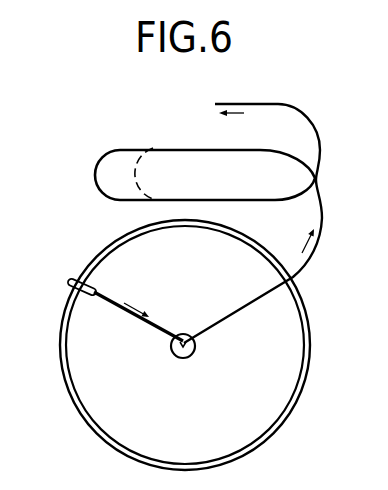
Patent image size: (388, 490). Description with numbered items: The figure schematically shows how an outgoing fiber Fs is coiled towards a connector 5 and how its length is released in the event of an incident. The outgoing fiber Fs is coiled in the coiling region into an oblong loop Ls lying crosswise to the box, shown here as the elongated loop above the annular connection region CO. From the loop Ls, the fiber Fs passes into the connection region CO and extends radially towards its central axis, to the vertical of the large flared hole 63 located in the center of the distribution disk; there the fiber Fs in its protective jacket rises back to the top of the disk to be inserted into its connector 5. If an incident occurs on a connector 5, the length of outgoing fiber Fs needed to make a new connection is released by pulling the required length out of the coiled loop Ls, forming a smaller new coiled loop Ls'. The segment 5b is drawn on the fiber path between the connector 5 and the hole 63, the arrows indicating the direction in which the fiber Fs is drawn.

The connection region CO is at (311, 354).
The flared hole 63 is at (188, 358).
The fiber-to-fiber connector 5 is at (70, 289).
The strand segment from tab 5b is at (97, 290).
The outgoing fiber Fs is at (321, 109).
The coiled loop Ls is at (189, 189).
The new coiled loop Ls' is at (166, 173).